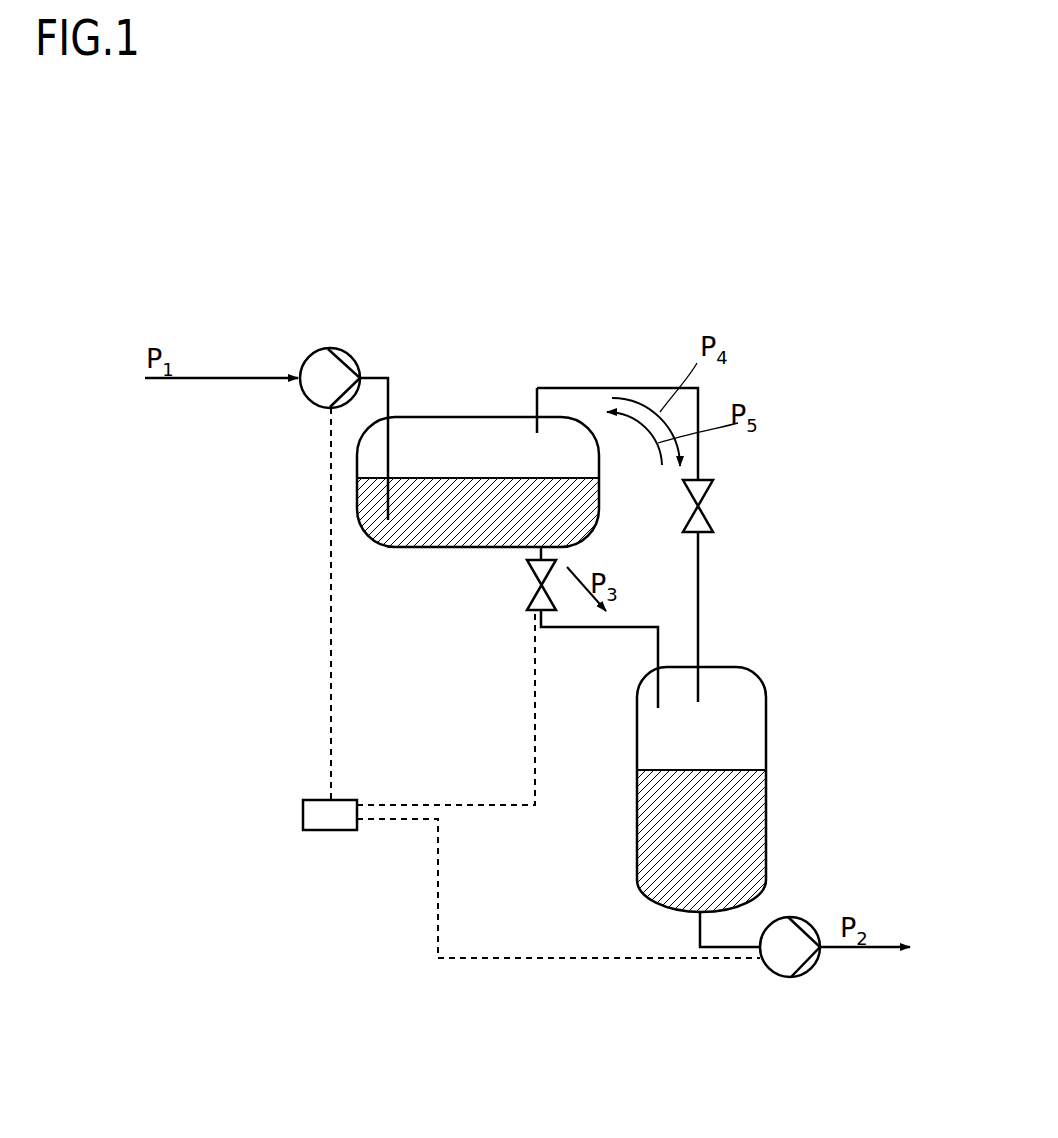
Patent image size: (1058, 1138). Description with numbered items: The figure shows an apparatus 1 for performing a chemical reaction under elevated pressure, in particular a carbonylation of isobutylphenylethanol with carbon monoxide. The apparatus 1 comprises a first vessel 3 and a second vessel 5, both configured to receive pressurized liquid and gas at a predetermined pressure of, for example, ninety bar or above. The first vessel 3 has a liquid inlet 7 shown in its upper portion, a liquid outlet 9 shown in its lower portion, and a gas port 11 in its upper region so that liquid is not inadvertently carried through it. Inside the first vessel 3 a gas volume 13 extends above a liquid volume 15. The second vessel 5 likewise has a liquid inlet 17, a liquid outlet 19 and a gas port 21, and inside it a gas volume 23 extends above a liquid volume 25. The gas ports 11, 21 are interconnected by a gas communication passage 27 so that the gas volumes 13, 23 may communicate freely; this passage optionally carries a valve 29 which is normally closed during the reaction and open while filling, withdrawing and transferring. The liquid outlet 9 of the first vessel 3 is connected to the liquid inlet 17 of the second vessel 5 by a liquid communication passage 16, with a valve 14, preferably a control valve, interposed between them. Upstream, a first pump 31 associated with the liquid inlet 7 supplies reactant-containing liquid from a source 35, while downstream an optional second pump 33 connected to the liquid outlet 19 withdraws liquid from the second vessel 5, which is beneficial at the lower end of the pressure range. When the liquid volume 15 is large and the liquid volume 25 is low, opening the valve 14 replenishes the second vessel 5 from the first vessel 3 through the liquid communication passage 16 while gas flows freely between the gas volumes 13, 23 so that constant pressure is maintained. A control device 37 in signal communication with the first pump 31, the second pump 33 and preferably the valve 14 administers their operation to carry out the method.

The apparatus 1 is at (722, 263).
The first vessel 3 is at (458, 549).
The second vessel 5 is at (635, 772).
The liquid inlet 7 is at (393, 414).
The liquid outlet 9 is at (530, 551).
The gas port 11 is at (531, 414).
The gas volume 13 is at (443, 446).
The valve 14 is at (548, 560).
The liquid volume 15 is at (402, 522).
The liquid communication passage 16 is at (652, 622).
The liquid inlet 17 is at (655, 668).
The liquid outlet 19 is at (696, 916).
The gas port 21 is at (703, 664).
The gas volume 23 is at (742, 722).
The liquid volume 25 is at (732, 830).
The gas communication passage 27 is at (604, 387).
The valve 29 is at (710, 494).
The first pump 31 is at (327, 350).
The second pump 33 is at (800, 975).
The source 35 is at (193, 377).
The control device 37 is at (323, 830).